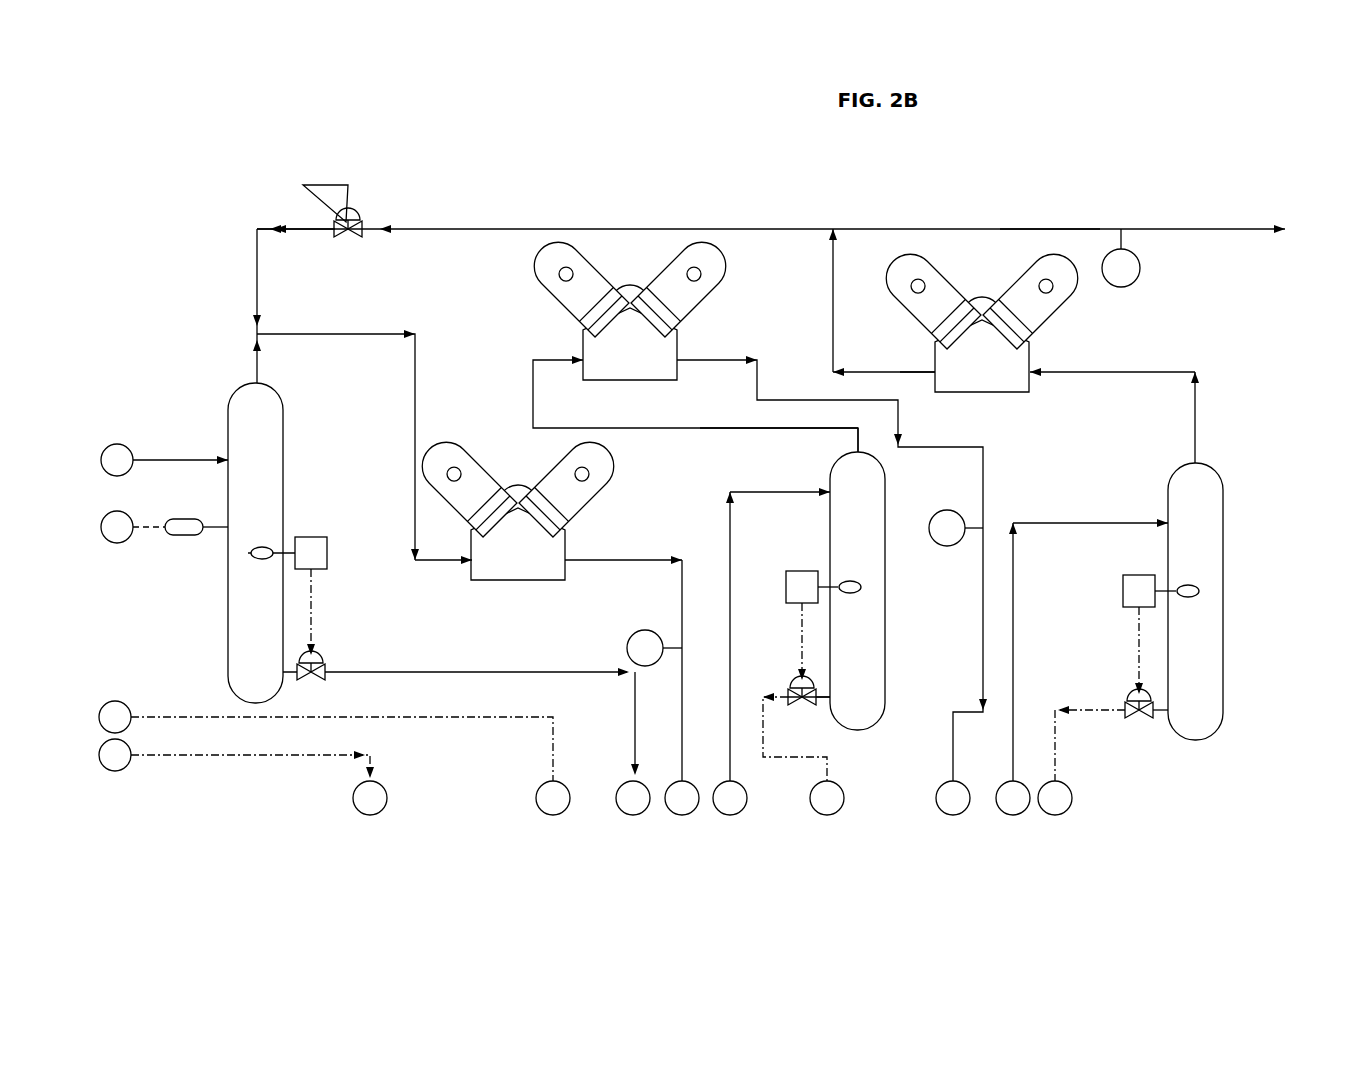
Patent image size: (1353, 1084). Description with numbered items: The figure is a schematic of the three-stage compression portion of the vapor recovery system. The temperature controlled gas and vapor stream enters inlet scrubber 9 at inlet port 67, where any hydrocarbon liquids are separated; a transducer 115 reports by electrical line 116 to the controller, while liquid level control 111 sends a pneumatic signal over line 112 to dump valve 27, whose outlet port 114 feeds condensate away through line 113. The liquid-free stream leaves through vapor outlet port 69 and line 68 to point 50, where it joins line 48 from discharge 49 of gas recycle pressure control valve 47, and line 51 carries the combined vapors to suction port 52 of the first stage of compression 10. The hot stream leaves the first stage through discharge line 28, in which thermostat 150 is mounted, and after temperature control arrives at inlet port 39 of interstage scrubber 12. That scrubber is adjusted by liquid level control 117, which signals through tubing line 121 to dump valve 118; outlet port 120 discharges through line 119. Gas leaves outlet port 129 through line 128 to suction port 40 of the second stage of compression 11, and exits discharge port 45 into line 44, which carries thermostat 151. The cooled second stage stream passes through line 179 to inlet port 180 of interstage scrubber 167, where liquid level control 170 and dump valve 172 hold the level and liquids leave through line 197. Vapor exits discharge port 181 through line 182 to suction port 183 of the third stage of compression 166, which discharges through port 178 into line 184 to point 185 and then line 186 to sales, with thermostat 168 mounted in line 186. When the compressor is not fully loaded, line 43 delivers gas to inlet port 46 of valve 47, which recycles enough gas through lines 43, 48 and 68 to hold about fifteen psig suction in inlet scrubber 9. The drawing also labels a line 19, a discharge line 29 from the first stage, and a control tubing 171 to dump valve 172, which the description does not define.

The inlet scrubber 9 is at (227, 608).
The first stage of compression 10 is at (590, 494).
The second stage of compression 11 is at (705, 292).
The interstage scrubber 12 is at (830, 522).
The line to E 19 is at (255, 755).
The dump valve 27 is at (300, 661).
The discharge line 28 is at (680, 602).
The first stage discharge line 29 is at (568, 560).
The inlet port 39 is at (830, 490).
The suction port 40 is at (580, 358).
The line 43 is at (435, 229).
The line 44 is at (980, 482).
The discharge port 45 is at (680, 358).
The inlet port 46 is at (370, 226).
The gas recycle pressure control valve 47 is at (362, 205).
The line 48 is at (255, 285).
The discharge 49 is at (325, 224).
The point 50 is at (233, 315).
The line 51 is at (380, 334).
The suction port 52 is at (468, 560).
The inlet port 67 is at (227, 455).
The line 68 is at (255, 350).
The vapor outlet port 69 is at (250, 382).
The liquid level control 111 is at (328, 556).
The line 112 is at (305, 607).
The line 113 is at (507, 675).
The outlet port 114 is at (328, 675).
The transducer 115 is at (183, 518).
The electrical line 116 is at (470, 717).
The liquid level control 117 is at (788, 594).
The dump valve 118 is at (802, 705).
The line 119 is at (822, 757).
The outlet port 120 is at (790, 694).
The tubing line 121 is at (820, 632).
The line 128 is at (760, 428).
The outlet port 129 is at (858, 452).
The thermostat 150 is at (645, 630).
The thermostat 151 is at (947, 510).
The third stage of compression 166 is at (1062, 303).
The interstage scrubber 167 is at (1225, 522).
The thermostat 168 is at (1124, 287).
The liquid level control 170 is at (1142, 575).
The level control signal line 171 is at (1145, 650).
The dump valve 172 is at (1140, 720).
The discharge port 178 is at (933, 370).
The line 179 is at (1042, 523).
The inlet port 180 is at (1165, 521).
The discharge port 181 is at (1202, 463).
The line 182 is at (1198, 410).
The suction port 183 is at (1035, 370).
The line 184 is at (833, 300).
The point 185 is at (834, 229).
The line 186 is at (990, 229).
The line 197 is at (1078, 716).